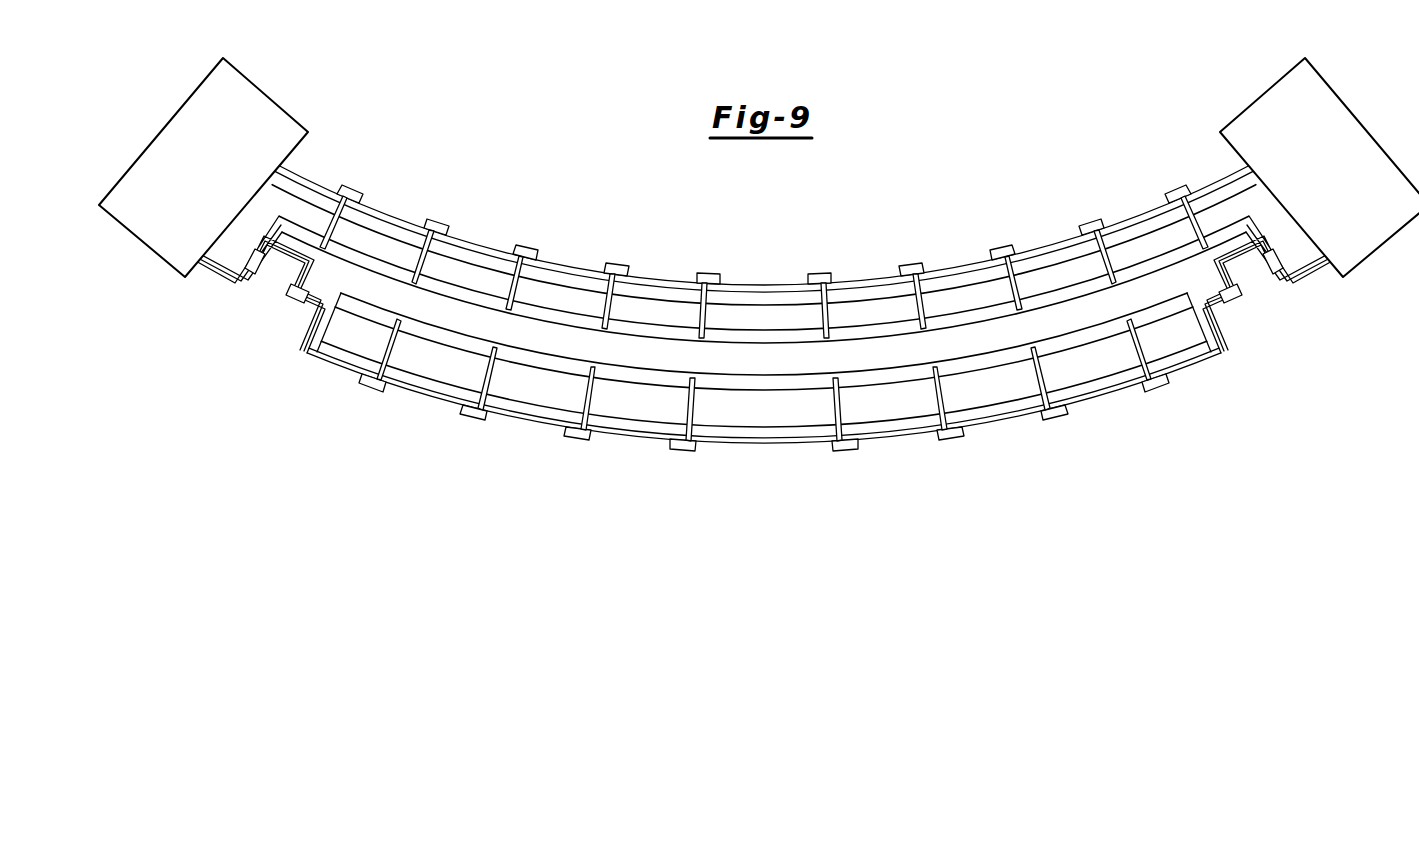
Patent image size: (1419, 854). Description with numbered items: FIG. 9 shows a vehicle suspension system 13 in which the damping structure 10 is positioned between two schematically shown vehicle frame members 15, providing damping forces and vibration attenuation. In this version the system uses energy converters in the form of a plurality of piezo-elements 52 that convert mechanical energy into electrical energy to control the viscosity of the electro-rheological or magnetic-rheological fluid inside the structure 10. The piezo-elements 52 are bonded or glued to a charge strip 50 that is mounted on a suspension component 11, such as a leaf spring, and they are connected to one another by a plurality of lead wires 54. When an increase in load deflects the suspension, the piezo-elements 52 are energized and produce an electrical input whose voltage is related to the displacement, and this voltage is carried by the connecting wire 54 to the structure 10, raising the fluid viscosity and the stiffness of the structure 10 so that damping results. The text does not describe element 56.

The structure 10 is at (1248, 192).
The suspension component 11 is at (1292, 228).
The vehicle suspension system 13 is at (759, 281).
The vehicle frame members 15 is at (177, 153).
The charge strip 50 is at (412, 225).
The piezo-elements 52 is at (352, 190).
The lead wires 54 is at (389, 213).
The lower connecting pin 56 is at (391, 344).